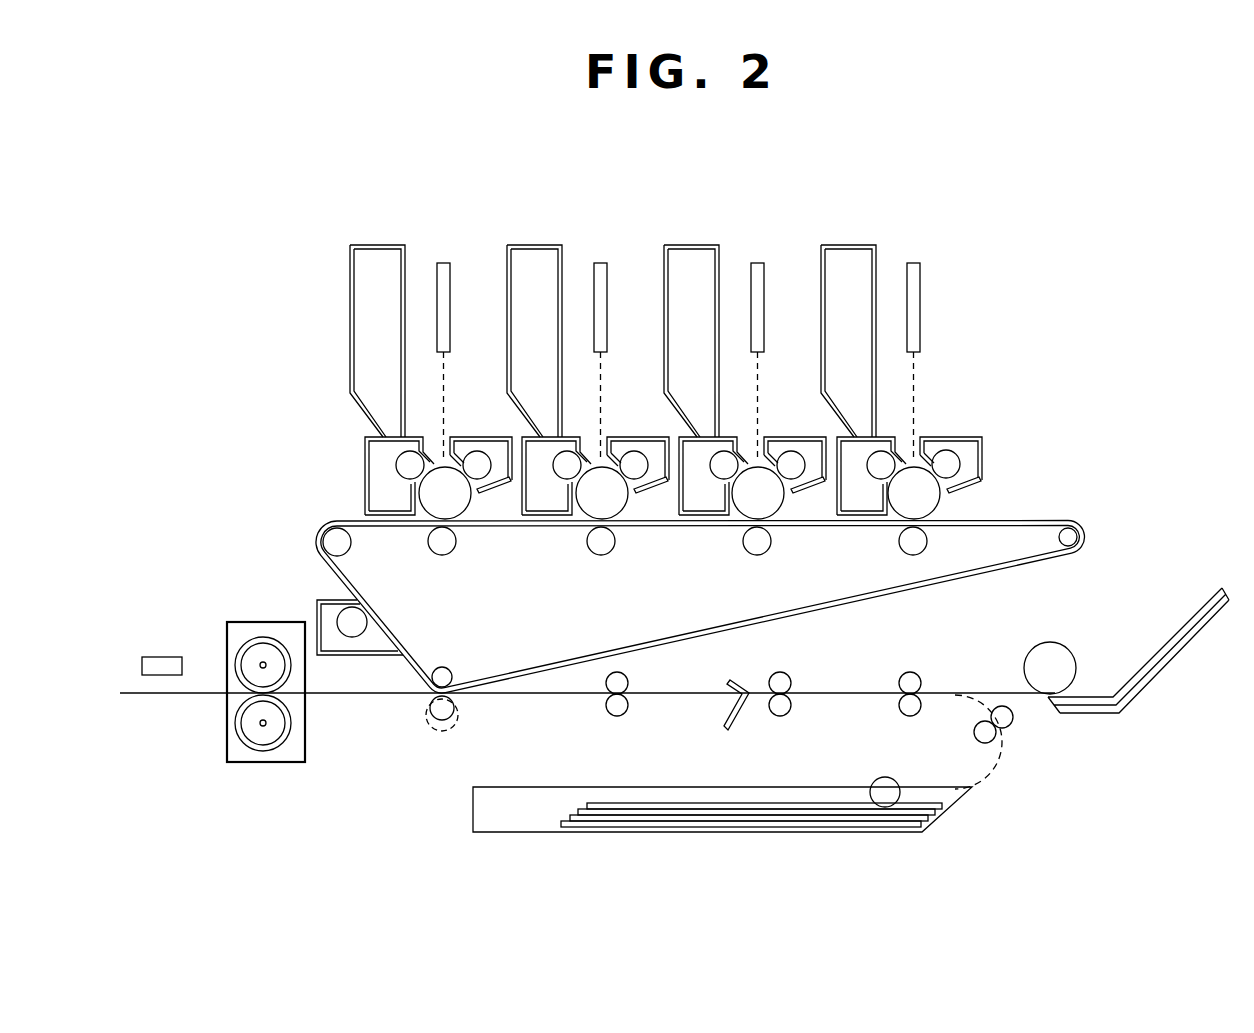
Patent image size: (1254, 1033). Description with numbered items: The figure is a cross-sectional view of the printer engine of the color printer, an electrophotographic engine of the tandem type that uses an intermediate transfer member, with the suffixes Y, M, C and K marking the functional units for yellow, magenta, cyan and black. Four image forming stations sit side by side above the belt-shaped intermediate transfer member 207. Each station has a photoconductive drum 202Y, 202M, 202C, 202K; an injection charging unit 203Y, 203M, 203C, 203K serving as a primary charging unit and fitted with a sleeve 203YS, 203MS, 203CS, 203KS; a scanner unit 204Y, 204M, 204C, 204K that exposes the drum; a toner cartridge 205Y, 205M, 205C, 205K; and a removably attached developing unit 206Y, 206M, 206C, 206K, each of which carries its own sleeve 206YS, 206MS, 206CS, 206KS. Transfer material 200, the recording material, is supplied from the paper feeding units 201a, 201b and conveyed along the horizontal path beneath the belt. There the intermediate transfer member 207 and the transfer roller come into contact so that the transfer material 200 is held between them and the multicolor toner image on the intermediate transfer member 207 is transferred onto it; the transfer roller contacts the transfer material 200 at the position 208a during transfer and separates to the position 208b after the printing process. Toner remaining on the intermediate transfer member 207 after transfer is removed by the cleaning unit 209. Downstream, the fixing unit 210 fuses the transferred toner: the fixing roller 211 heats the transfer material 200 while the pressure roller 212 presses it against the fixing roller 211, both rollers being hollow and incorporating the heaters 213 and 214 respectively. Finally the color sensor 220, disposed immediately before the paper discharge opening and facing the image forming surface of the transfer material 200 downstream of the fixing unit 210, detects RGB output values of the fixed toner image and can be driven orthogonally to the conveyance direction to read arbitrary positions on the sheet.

The transfer material 200 is at (668, 803).
The paper feeding unit 201a is at (803, 787).
The paper feeding unit 201b is at (1178, 630).
The photoconductive drum 202Y is at (465, 460).
The photoconductive drum 202M is at (623, 460).
The photoconductive drum 202C is at (781, 460).
The photoconductive drum 202K is at (945, 452).
The injection charging unit 203Y is at (497, 475).
The injection charging unit 203M is at (654, 475).
The injection charging unit 203C is at (812, 475).
The injection charging unit 203K is at (977, 472).
The sleeve 203YS is at (478, 470).
The sleeve 203MS is at (637, 490).
The sleeve 203CS is at (795, 490).
The sleeve 203KS is at (959, 458).
The scanner unit 204Y is at (443, 263).
The scanner unit 204M is at (600, 263).
The scanner unit 204C is at (757, 263).
The scanner unit 204K is at (921, 272).
The toner cartridge 205Y is at (366, 245).
The toner cartridge 205M is at (522, 245).
The toner cartridge 205C is at (683, 245).
The toner cartridge 205K is at (840, 245).
The developing unit 206Y is at (378, 498).
The developing unit 206M is at (552, 500).
The developing unit 206C is at (710, 500).
The developing unit 206K is at (860, 500).
The sleeve 206YS is at (405, 478).
The sleeve 206MS is at (569, 460).
The sleeve 206CS is at (723, 458).
The sleeve 206KS is at (882, 455).
The intermediate transfer member 207 is at (655, 644).
The position 208a is at (455, 708).
The position 208b is at (440, 733).
The cleaning unit 209 is at (328, 598).
The fixing unit 210 is at (305, 752).
The fixing roller 211 is at (268, 638).
The pressure roller 212 is at (278, 750).
The heater 213 is at (263, 665).
The heater 214 is at (262, 727).
The color sensor 220 is at (162, 657).